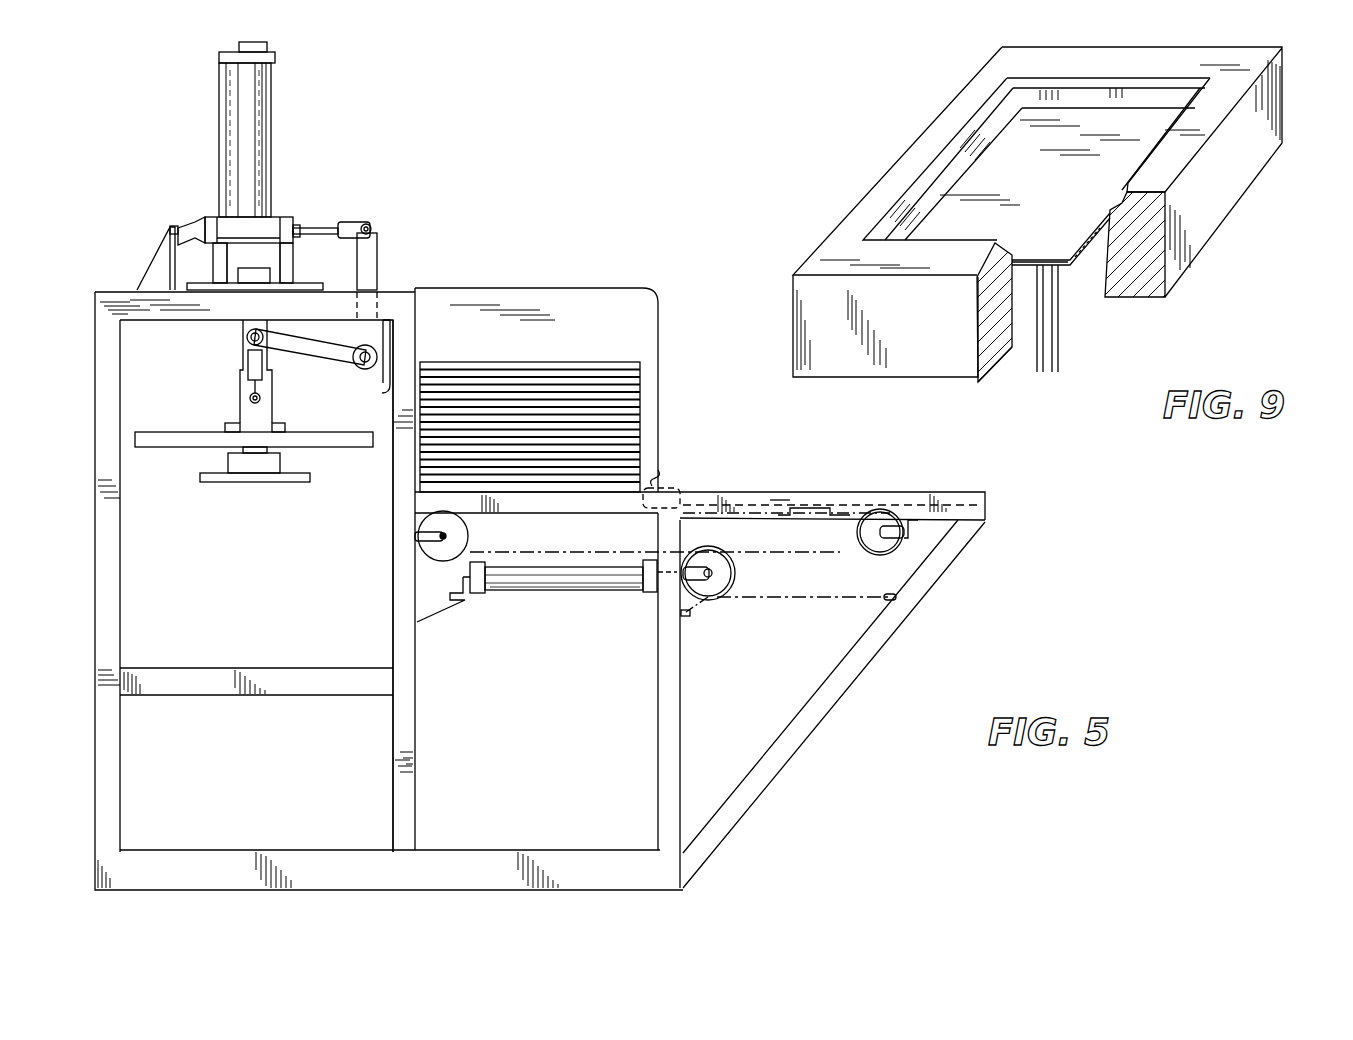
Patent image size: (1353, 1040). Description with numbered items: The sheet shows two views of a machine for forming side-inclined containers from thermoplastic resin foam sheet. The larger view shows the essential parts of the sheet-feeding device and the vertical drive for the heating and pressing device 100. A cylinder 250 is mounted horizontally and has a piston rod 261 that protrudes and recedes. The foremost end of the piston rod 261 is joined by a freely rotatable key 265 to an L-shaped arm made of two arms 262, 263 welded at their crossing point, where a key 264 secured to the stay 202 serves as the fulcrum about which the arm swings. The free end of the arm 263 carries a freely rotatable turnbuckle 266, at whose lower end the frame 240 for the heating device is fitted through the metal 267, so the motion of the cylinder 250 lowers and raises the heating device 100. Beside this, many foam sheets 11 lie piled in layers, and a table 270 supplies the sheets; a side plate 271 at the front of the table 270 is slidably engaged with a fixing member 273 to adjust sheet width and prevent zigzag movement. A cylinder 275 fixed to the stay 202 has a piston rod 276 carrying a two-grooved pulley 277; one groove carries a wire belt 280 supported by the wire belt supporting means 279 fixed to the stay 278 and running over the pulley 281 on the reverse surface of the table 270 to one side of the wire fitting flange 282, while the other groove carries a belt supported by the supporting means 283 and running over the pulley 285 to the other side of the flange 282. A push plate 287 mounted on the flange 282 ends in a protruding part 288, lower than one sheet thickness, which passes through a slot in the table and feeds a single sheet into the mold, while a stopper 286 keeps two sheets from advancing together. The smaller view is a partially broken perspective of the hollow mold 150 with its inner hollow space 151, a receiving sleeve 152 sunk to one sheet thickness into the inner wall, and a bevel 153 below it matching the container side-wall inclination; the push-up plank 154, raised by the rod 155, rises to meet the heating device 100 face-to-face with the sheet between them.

In FIG. 5, the piled thermoplastic resin foam sheets 11 is at (627, 385).
In FIG. 5, the heating and pressing device 100 is at (250, 467).
In FIG. 9, the hollow mold 150 is at (1245, 65).
In FIG. 9, the hollow space 151 is at (1025, 315).
In FIG. 9, the receiving sleeve 152 is at (1077, 92).
In FIG. 9, the bevel 153 is at (932, 192).
In FIG. 9, the push-up plank 154 is at (1073, 190).
In FIG. 9, the rod 155 is at (1047, 377).
In FIG. 5, the stay 202 is at (413, 678).
In FIG. 5, the frame 240 is at (198, 447).
In FIG. 5, the cylinder 250 is at (250, 230).
In FIG. 5, the piston rod 261 is at (323, 227).
In FIG. 5, the arm 262 is at (372, 260).
In FIG. 5, the arm 263 is at (333, 352).
In FIG. 5, the key 264 is at (364, 359).
In FIG. 5, the key 265 is at (369, 223).
In FIG. 5, the turnbuckle 266 is at (248, 357).
In FIG. 5, the metal 267 is at (245, 410).
In FIG. 5, the table 270 is at (983, 472).
In FIG. 5, the side plate 271 is at (633, 310).
In FIG. 5, the fixing member 273 is at (663, 483).
In FIG. 5, the cylinder 275 is at (567, 583).
In FIG. 5, the piston rod 276 is at (670, 577).
In FIG. 5, the pulley 277 is at (708, 583).
In FIG. 5, the stay 278 is at (860, 668).
In FIG. 5, the wire belt supporting means 279 is at (896, 597).
In FIG. 5, the wire belt 280 is at (845, 597).
In FIG. 5, the pulley 281 is at (880, 512).
In FIG. 5, the wire fitting flange 282 is at (805, 508).
In FIG. 5, the supporting means 283 is at (683, 616).
In FIG. 5, the pulley 285 is at (469, 536).
In FIG. 5, the stopper 286 is at (413, 458).
In FIG. 5, the push plate 287 is at (790, 480).
In FIG. 5, the protruding part 288 is at (667, 487).